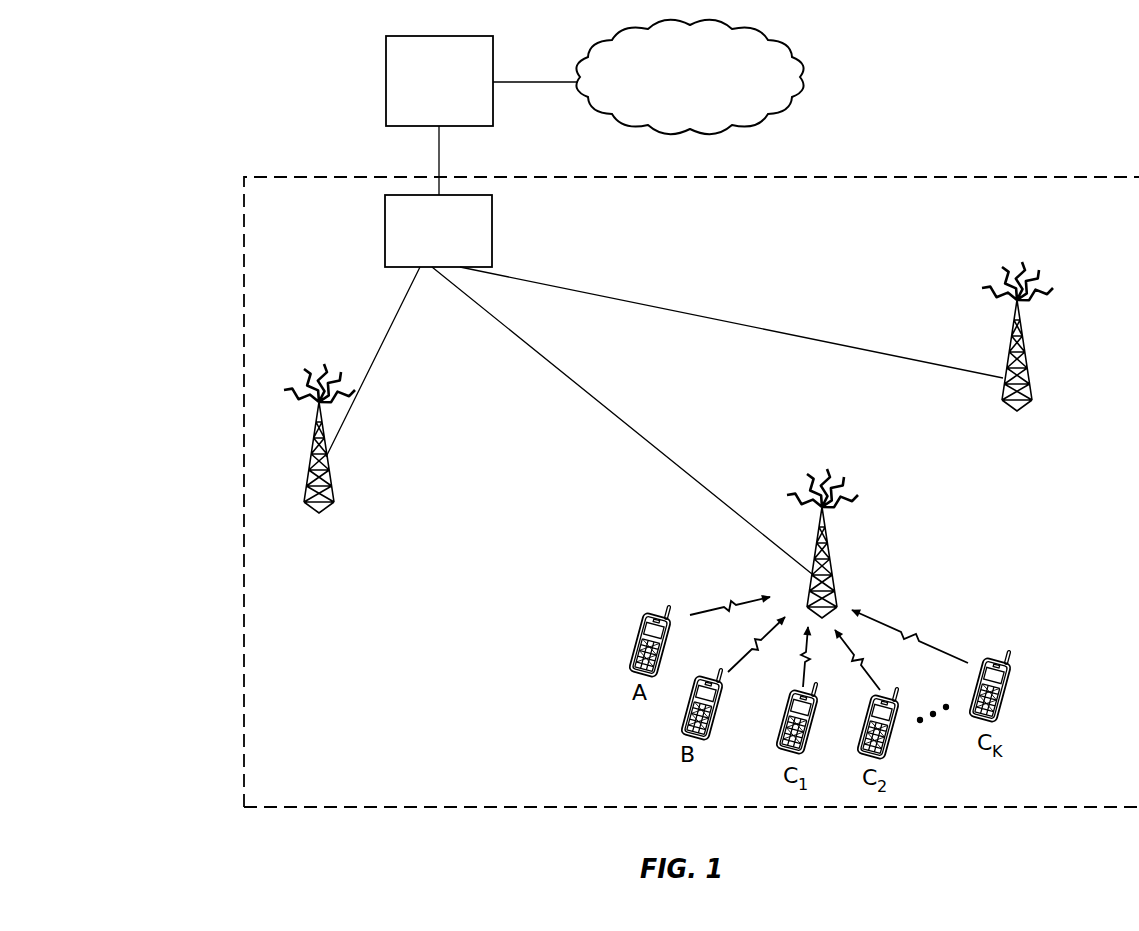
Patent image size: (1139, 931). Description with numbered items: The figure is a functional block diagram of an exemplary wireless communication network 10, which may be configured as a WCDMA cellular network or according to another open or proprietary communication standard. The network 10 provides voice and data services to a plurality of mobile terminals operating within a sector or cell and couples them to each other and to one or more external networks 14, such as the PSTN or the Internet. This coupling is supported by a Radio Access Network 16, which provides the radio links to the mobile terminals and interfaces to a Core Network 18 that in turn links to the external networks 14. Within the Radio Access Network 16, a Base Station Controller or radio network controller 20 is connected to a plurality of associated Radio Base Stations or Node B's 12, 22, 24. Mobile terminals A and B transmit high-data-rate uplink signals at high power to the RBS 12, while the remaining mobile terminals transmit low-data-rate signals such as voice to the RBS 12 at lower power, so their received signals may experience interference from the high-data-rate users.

The wireless communication network 10 is at (185, 103).
The radio base station 12 is at (828, 542).
The external network 14 is at (675, 115).
The radio access network 16 is at (1109, 227).
The core network 18 is at (422, 103).
The base station controller 20 is at (421, 256).
The radio base station 22 is at (1027, 353).
The radio base station 24 is at (330, 477).